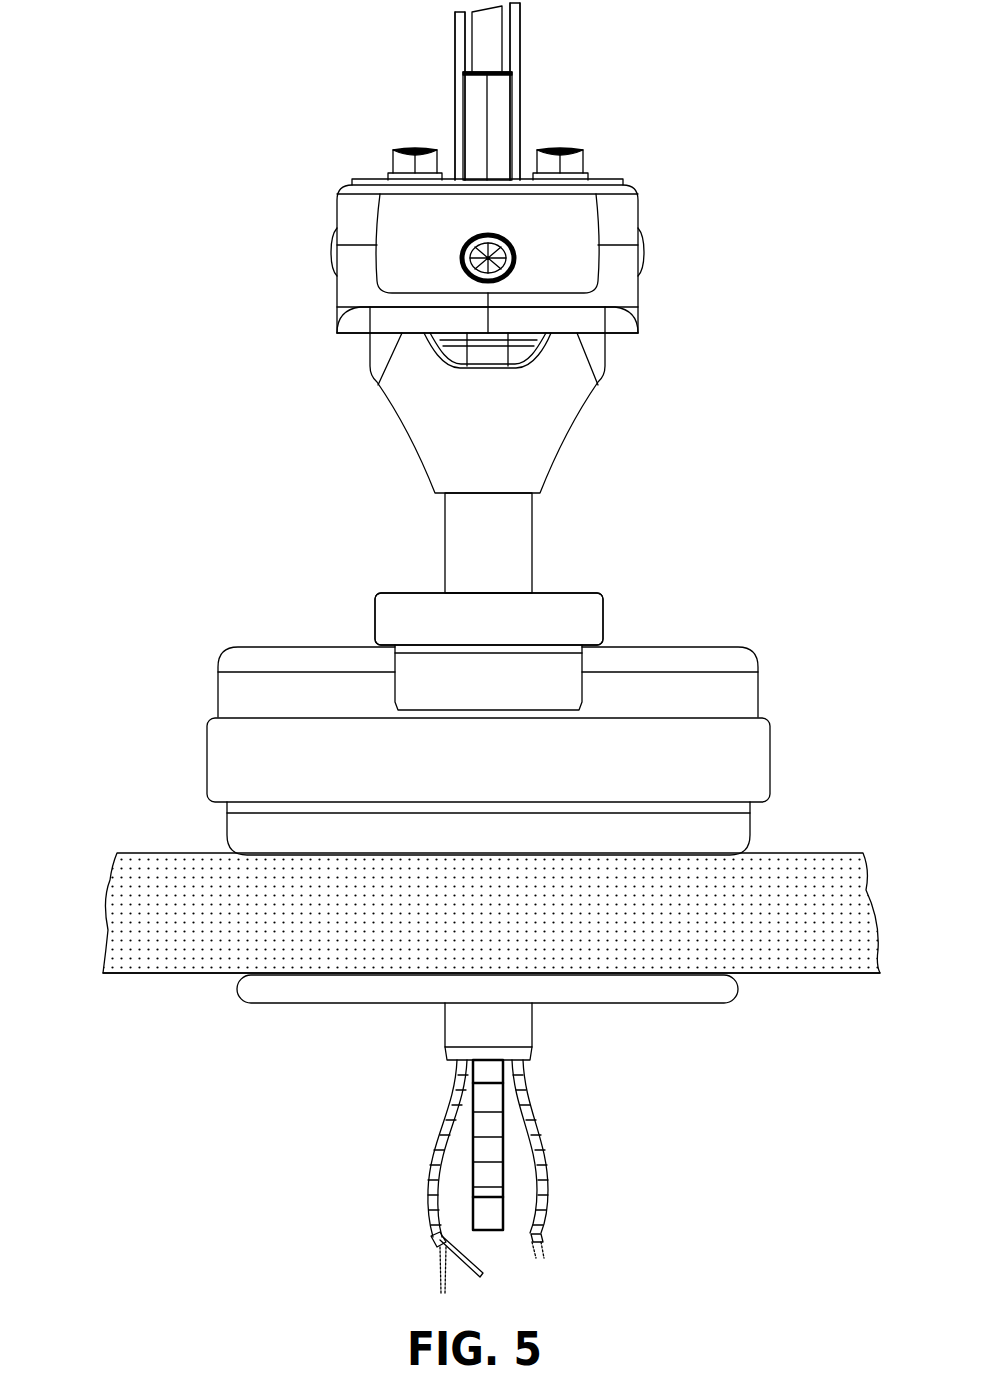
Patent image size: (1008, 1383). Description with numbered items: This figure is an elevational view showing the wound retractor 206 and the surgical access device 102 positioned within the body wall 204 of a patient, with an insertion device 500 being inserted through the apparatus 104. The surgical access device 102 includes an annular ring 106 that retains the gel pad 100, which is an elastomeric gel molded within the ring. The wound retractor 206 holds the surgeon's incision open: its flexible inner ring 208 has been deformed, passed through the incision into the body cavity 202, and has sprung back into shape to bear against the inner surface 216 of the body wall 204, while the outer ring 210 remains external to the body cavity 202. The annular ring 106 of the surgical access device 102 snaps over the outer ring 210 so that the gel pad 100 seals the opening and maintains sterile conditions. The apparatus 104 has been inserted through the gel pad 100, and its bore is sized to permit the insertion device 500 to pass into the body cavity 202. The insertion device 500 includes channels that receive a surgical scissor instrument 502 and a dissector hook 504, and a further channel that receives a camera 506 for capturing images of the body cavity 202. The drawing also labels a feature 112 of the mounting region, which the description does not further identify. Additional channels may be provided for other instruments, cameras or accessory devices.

The gel pad 100 is at (683, 647).
The surgical access device 102 is at (463, 689).
The apparatus for providing instrument access 104 is at (405, 583).
The annular ring 106 is at (207, 755).
The mounting block 112 is at (605, 621).
The body cavity 202 is at (790, 1226).
The body wall 204 is at (457, 949).
The wound retractor 206 is at (459, 898).
The flexible inner ring 208 is at (738, 988).
The outer ring 210 is at (227, 825).
The inner surface 216 is at (178, 978).
The insertion device 500 is at (455, 37).
The surgical scissor instrument 502 is at (520, 20).
The dissector hook 504 is at (548, 1175).
The camera 506 is at (512, 60).